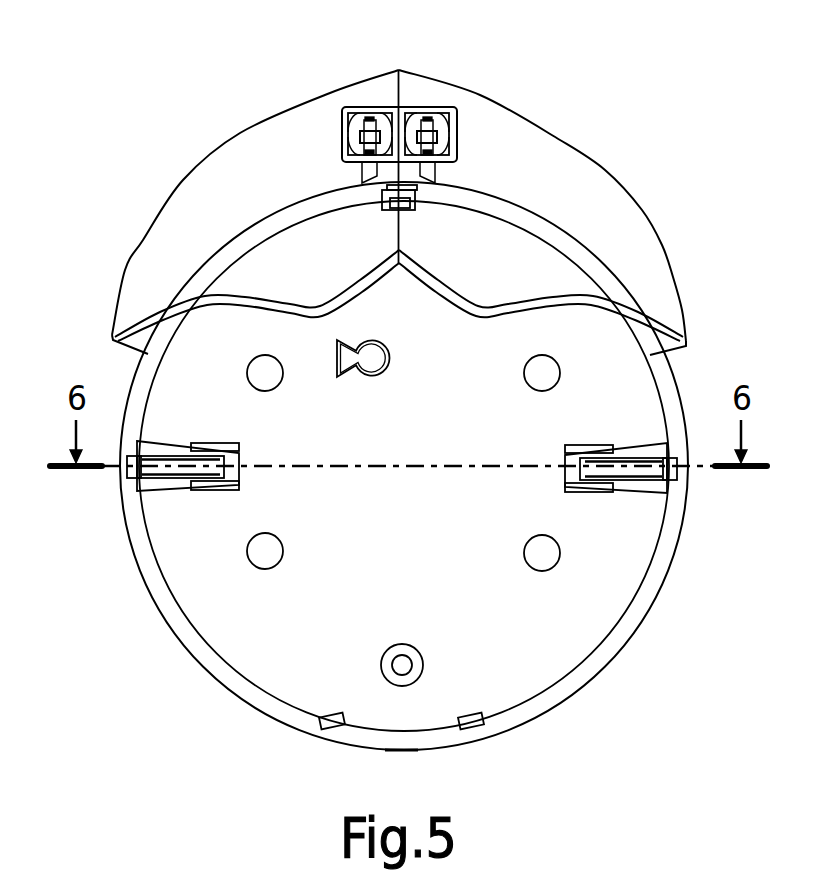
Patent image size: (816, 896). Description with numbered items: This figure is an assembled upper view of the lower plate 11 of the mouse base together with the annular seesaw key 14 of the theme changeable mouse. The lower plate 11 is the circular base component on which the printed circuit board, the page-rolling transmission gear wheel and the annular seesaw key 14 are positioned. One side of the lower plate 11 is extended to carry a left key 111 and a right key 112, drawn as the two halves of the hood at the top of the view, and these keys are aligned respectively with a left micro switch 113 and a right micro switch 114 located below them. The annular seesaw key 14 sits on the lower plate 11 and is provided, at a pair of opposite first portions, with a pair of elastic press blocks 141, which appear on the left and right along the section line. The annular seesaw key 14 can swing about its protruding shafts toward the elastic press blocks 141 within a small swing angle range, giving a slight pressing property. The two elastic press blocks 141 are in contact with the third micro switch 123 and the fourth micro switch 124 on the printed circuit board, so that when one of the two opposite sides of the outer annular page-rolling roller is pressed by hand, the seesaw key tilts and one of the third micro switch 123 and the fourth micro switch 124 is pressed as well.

The lower plate 11 is at (548, 665).
The annular seesaw key 14 is at (618, 640).
The left key 111 is at (287, 135).
The right key 112 is at (523, 137).
The left micro switch 113 is at (368, 117).
The right micro switch 114 is at (428, 117).
The third micro switch 123 is at (230, 477).
The fourth micro switch 124 is at (570, 470).
The elastic press blocks 141 is at (203, 468).